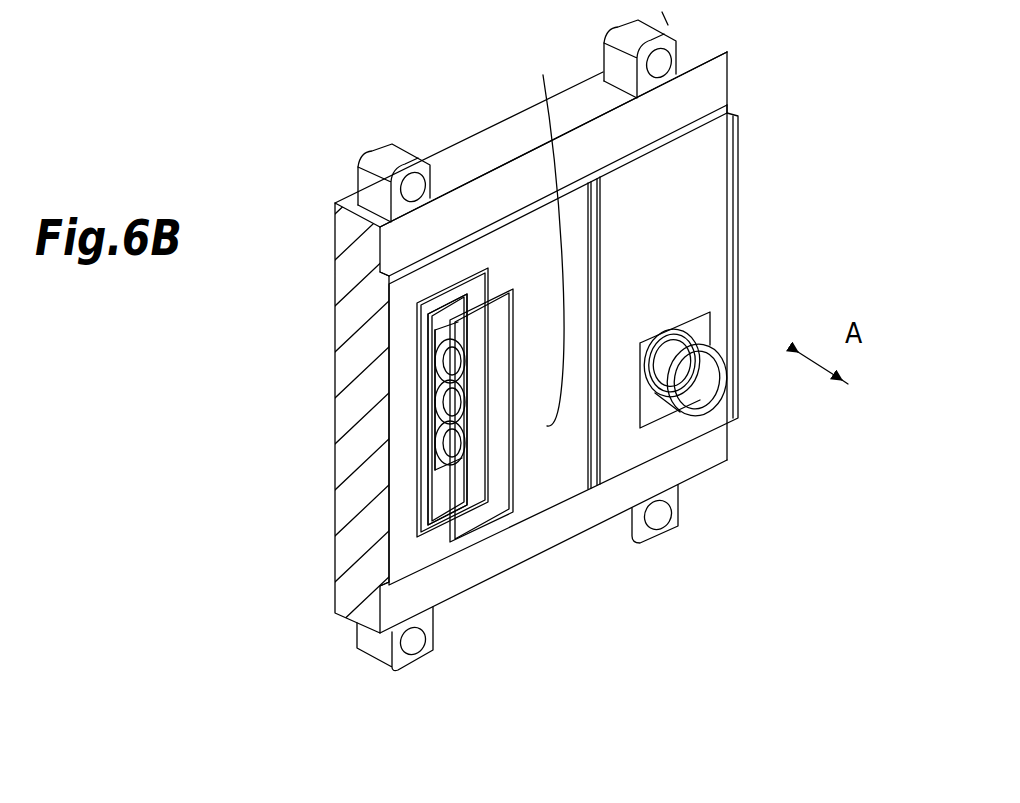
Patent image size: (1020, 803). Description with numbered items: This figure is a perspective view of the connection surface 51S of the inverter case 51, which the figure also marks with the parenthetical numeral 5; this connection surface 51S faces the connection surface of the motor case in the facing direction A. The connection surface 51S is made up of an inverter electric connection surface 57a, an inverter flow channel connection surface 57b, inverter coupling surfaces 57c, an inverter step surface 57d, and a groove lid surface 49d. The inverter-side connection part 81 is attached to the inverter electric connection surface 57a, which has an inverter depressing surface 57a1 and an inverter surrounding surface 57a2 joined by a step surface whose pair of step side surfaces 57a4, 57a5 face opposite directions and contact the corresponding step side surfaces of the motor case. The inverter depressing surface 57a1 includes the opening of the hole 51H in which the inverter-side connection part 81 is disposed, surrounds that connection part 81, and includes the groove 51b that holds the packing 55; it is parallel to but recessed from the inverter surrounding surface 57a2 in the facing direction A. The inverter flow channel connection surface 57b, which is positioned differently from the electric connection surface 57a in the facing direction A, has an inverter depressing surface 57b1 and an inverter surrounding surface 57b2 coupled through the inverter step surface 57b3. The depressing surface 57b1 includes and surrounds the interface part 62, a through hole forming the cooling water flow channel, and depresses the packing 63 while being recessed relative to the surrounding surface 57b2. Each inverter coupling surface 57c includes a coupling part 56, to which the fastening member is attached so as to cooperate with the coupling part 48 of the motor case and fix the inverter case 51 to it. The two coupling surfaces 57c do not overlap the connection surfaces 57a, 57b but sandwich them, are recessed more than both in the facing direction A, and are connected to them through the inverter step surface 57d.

The inverter case 51 is at (449, 124).
The device 5 is at (553, 139).
The groove 51b is at (491, 268).
The connection surface 51S is at (768, 230).
The hole 51H is at (440, 484).
The packing 55 is at (543, 496).
The coupling part 56 is at (380, 150).
The coupling part 48 is at (664, 12).
The groove lid surface 49d is at (545, 234).
The inverter electric connection surface 57a is at (562, 497).
The inverter depressing surface 57a1 is at (432, 548).
The inverter surrounding surface 57a2 is at (420, 395).
The step side surface 57a4 is at (427, 377).
The step side surface 57a5 is at (470, 505).
The inverter flow channel connection surface 57b is at (618, 478).
The inverter depressing surface 57b1 is at (672, 422).
The inverter surrounding surface 57b2 is at (722, 185).
The inverter step surface 57b3 is at (700, 323).
The inverter coupling surface 57c is at (735, 62).
The inverter step surface 57d is at (395, 276).
The interface part 62 is at (698, 333).
The packing 63 is at (731, 410).
The inverter-side connection part 81 is at (427, 331).